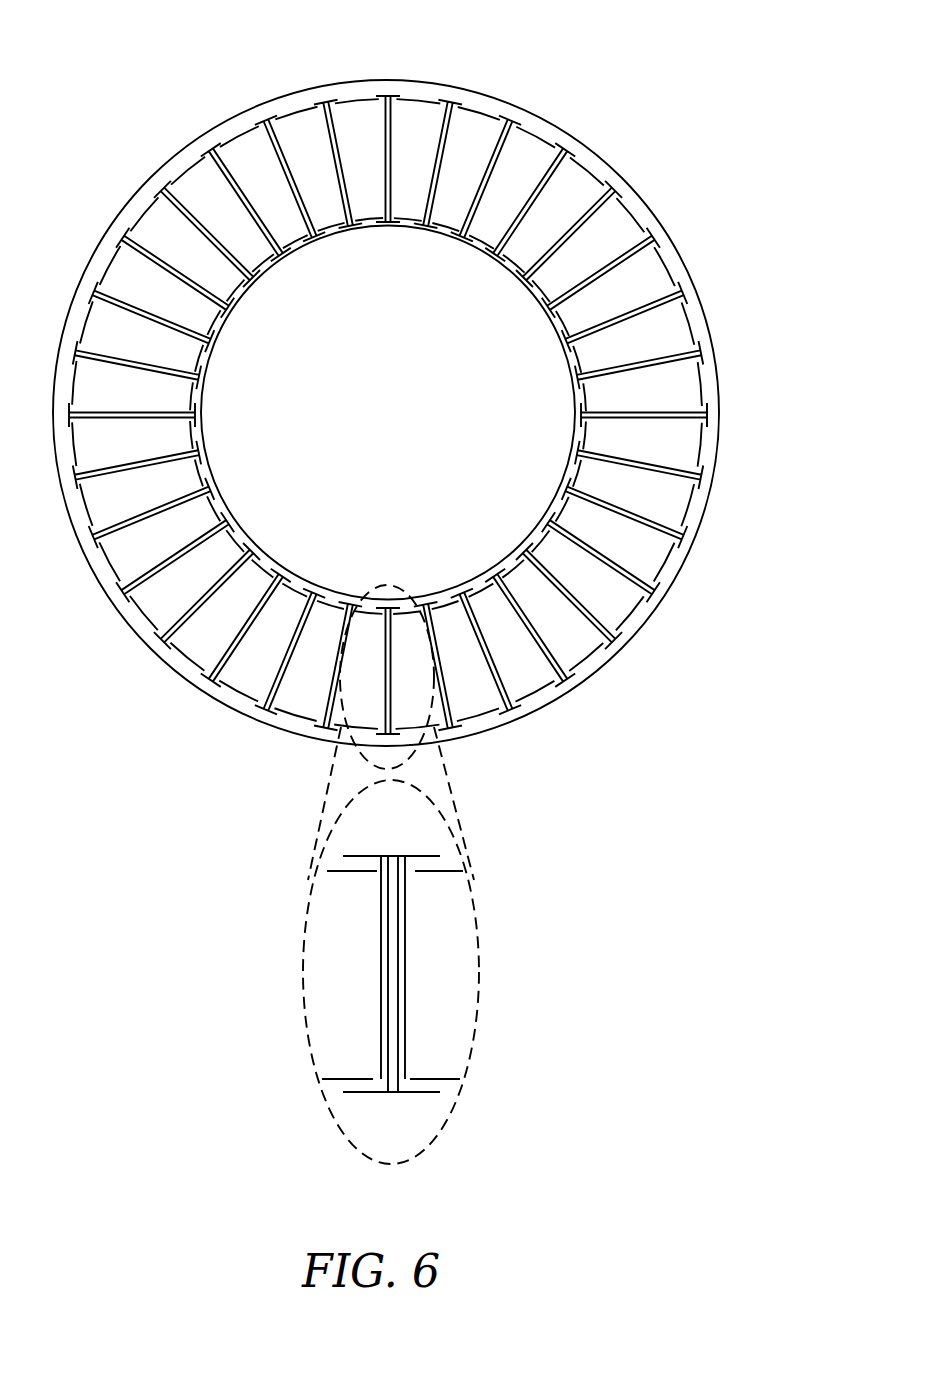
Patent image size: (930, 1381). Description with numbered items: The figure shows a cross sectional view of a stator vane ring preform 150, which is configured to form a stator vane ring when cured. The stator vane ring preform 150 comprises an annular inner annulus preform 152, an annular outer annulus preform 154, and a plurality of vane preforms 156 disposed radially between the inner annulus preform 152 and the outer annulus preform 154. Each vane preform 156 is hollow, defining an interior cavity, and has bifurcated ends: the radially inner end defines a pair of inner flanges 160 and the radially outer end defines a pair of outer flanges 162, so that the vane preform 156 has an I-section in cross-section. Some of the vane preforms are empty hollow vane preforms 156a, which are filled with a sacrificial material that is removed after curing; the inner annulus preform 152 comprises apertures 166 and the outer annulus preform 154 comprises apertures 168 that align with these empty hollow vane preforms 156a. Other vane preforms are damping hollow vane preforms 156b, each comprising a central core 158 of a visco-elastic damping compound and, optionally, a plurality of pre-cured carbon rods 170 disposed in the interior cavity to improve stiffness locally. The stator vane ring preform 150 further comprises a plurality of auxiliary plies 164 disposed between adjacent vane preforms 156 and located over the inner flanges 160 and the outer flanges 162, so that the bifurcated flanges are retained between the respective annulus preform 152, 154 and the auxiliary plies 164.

The stator vane ring preform 150 is at (113, 87).
The inner annulus preform 152 is at (212, 466).
The outer annulus preform 154 is at (480, 92).
The vane preform 156 is at (148, 251).
The empty hollow vane preform 156a is at (647, 360).
The damping hollow vane preform 156b is at (648, 410).
The central core 158 is at (243, 200).
The inner flanges 160 is at (440, 856).
The outer flanges 162 is at (418, 1092).
The auxiliary plies 164 is at (706, 440).
The apertures 166 is at (352, 232).
The apertures 168 is at (325, 86).
The pre-cured carbon rods 170 is at (405, 956).